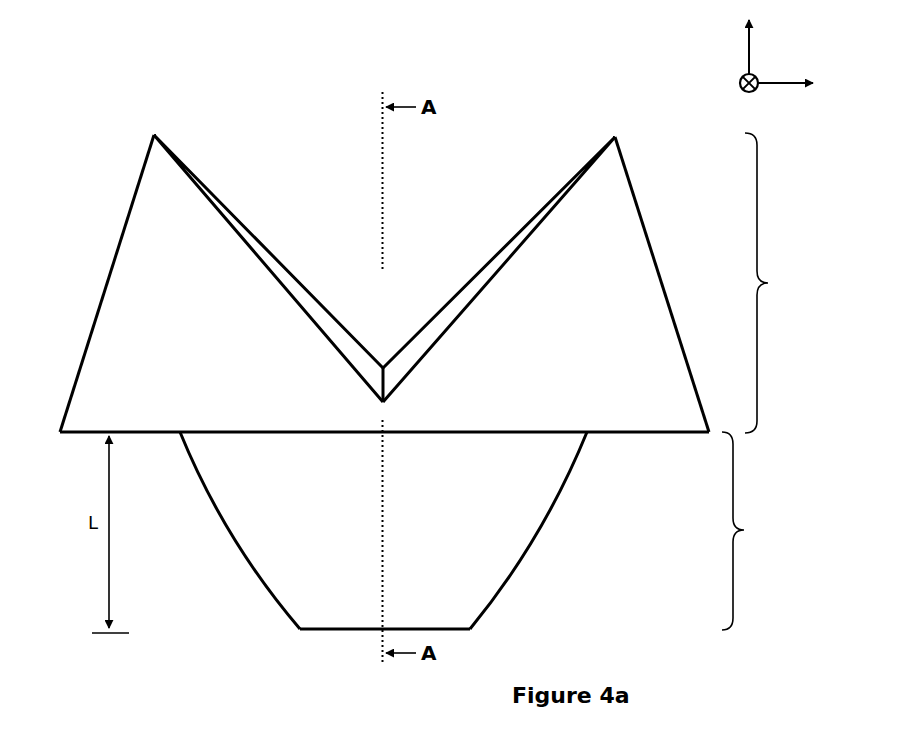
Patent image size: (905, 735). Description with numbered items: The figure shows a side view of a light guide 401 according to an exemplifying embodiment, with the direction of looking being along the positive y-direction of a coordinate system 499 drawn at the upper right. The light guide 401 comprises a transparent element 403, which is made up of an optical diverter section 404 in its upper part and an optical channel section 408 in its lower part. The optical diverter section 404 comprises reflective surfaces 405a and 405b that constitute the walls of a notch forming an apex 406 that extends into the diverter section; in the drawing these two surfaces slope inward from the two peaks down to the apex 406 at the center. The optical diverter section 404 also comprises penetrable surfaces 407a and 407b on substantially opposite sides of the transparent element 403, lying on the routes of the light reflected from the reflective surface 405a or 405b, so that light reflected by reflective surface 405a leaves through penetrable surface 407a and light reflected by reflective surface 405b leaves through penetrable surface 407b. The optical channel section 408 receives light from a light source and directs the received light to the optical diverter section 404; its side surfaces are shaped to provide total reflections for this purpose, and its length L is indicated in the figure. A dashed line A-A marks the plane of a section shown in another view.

The light guide 401 is at (386, 237).
The transparent element 403 is at (288, 394).
The optical diverter section 404 is at (778, 283).
The reflective surface 405a is at (276, 262).
The reflective surface 405b is at (528, 218).
The apex 406 is at (382, 377).
The penetrable surface 407a is at (138, 184).
The penetrable surface 407b is at (642, 198).
The optical channel section 408 is at (463, 531).
The coordinate system 499 is at (808, 54).